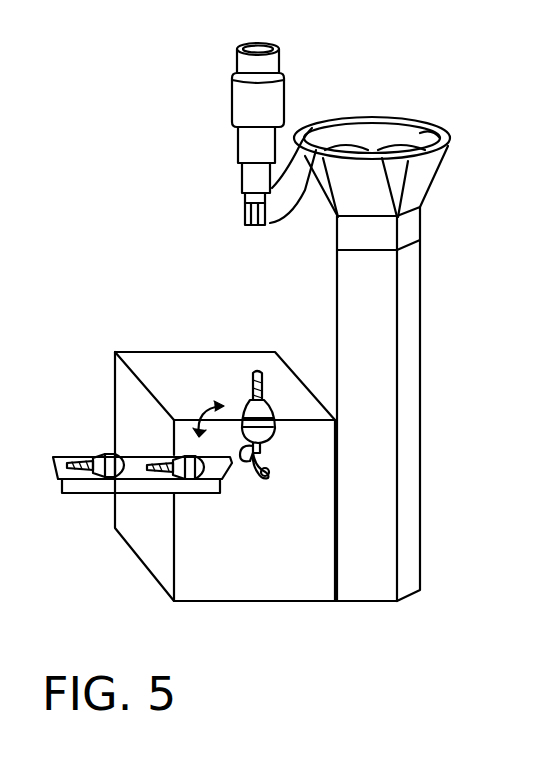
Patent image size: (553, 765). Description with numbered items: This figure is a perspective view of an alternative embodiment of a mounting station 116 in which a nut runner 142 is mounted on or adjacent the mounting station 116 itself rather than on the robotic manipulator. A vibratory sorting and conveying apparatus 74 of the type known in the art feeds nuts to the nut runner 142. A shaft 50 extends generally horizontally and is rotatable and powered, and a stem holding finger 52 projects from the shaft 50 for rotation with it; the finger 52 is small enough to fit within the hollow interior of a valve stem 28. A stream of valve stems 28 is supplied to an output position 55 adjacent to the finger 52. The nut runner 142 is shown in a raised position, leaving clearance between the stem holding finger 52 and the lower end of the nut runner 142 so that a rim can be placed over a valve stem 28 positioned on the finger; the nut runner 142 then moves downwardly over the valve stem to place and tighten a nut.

The mounting station 116 is at (196, 216).
The nut runner 142 is at (253, 110).
The vibratory sorting and conveying apparatus 74 is at (420, 186).
The valve stem 28 is at (253, 373).
The stem holding finger 52 is at (263, 452).
The shaft 50 is at (257, 476).
The output position 55 is at (232, 463).